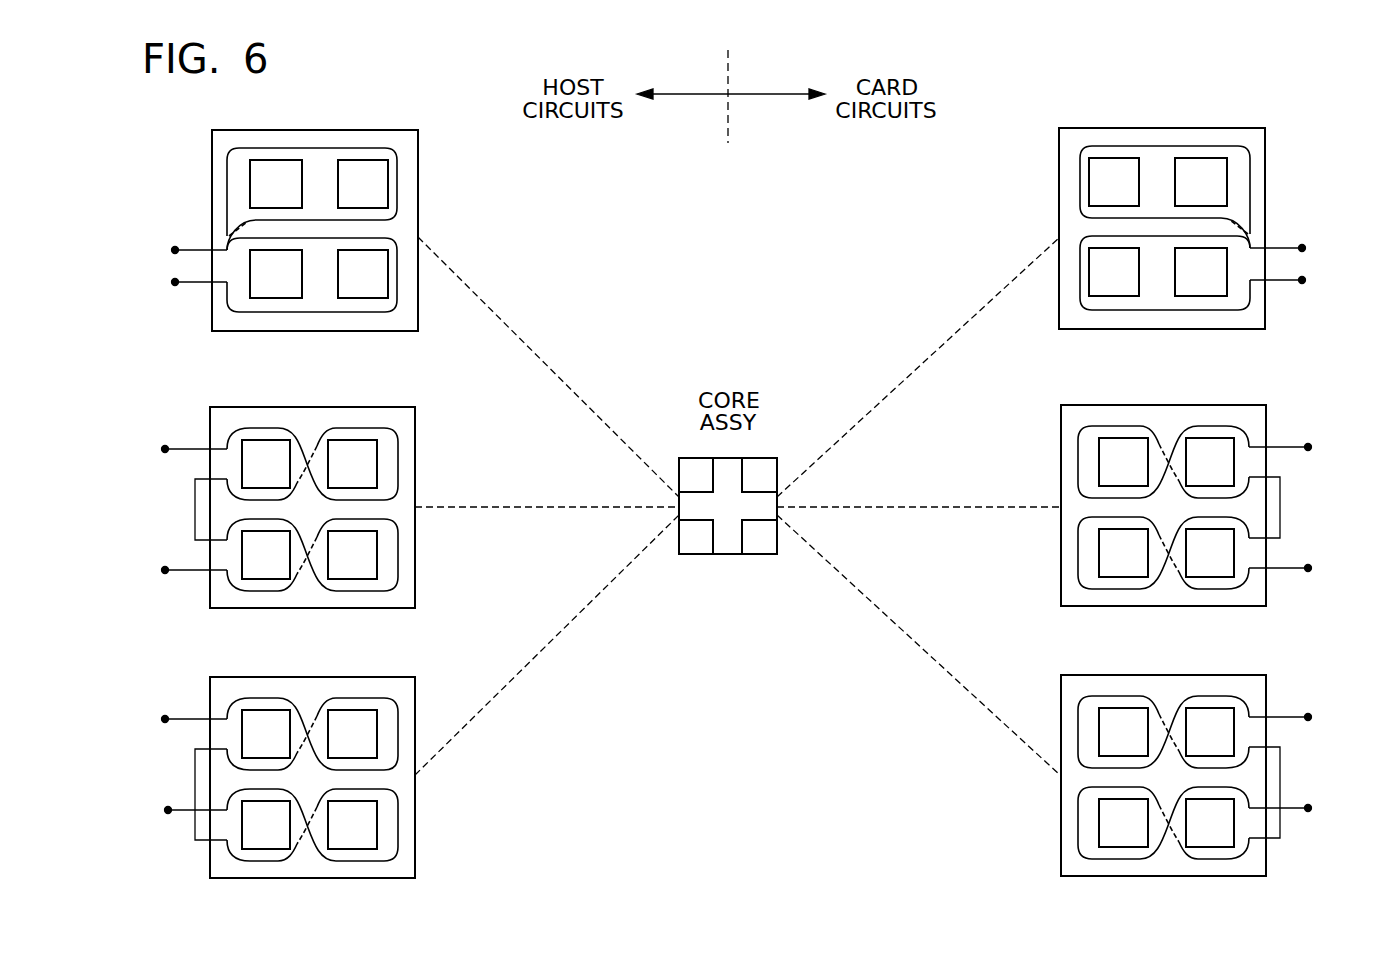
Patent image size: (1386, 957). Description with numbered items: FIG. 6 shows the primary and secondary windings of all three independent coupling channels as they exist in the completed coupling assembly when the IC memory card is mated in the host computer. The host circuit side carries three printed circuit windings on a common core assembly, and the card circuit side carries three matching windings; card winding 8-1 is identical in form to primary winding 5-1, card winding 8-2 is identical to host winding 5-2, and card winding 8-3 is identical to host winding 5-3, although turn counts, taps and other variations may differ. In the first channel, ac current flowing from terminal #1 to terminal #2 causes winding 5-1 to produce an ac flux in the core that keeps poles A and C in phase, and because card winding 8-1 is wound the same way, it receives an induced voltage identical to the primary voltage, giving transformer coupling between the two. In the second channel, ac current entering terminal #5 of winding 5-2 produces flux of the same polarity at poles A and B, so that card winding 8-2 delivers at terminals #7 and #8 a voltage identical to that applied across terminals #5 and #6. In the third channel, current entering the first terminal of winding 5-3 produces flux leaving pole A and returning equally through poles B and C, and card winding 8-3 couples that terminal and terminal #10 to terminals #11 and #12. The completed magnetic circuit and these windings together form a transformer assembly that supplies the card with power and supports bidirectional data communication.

The primary winding 5-1 is at (330, 230).
The host winding 5-2 is at (330, 507).
The host winding 5-3 is at (322, 777).
The card winding 8-1 is at (1145, 228).
The card winding 8-2 is at (1146, 505).
The card winding 8-3 is at (1152, 775).
The terminal # 1 is at (178, 251).
The terminal # 2 is at (178, 283).
The terminal # 5 is at (178, 449).
The terminal # 6 is at (178, 573).
The terminal # 7 is at (1301, 448).
The terminal # 8 is at (1301, 572).
The terminal # 10 is at (171, 812).
The terminal # 11 is at (1310, 717).
The terminal # 12 is at (1306, 810).